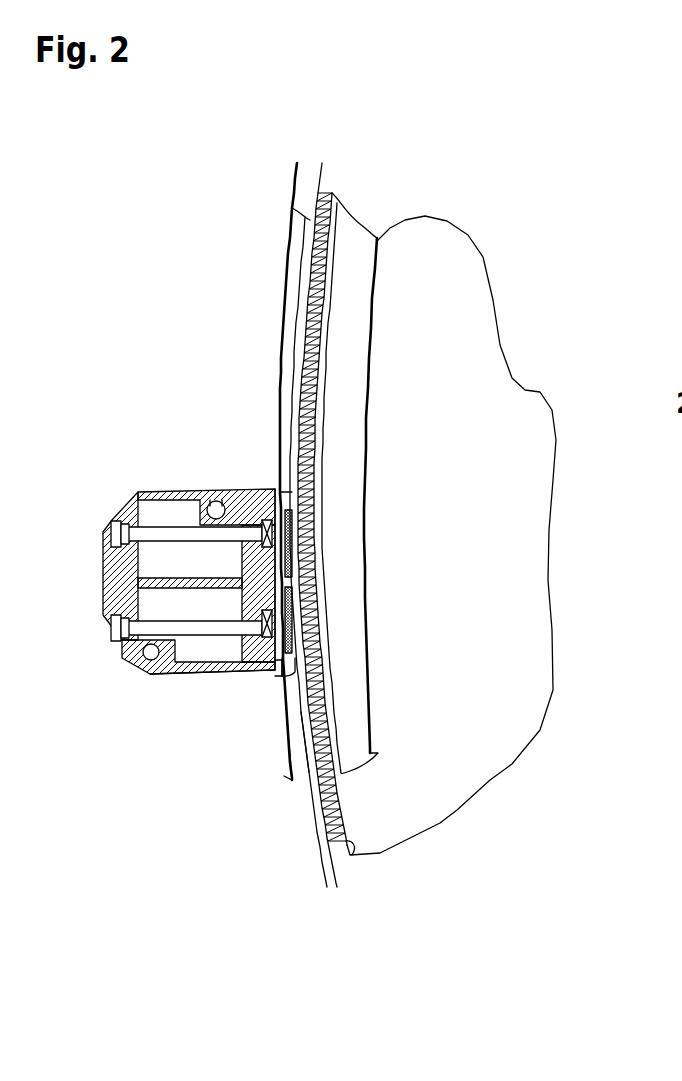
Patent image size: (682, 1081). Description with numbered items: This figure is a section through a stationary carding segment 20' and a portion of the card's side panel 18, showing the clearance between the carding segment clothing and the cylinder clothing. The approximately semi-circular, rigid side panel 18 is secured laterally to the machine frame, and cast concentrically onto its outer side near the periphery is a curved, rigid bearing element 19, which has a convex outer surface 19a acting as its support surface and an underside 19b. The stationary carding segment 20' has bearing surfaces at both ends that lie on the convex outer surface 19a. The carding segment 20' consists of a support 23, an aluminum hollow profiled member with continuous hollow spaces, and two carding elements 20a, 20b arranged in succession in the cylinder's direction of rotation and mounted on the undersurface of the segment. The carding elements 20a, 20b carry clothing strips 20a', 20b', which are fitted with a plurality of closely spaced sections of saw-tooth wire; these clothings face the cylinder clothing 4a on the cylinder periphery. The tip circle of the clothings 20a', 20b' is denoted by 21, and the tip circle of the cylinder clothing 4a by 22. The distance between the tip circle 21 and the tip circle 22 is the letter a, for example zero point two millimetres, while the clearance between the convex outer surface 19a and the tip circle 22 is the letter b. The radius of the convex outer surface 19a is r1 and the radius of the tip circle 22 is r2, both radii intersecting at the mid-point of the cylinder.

The bearing element 19 is at (343, 250).
The convex outer surface 19a is at (284, 236).
The underside 19b is at (378, 240).
The side panel 18 is at (506, 390).
The stationary carding segment 20' is at (186, 546).
The carding element 20a is at (222, 688).
The clothing strip 20a' is at (257, 698).
The carding element 20b is at (260, 516).
The clothing strip 20b' is at (457, 568).
The tip circle of the clothings 21 is at (290, 748).
The tip circle of the cylinder clothing 22 is at (305, 748).
The support 23 is at (163, 675).
The cylinder clothing 4a is at (342, 833).
The distance between the tip circles a is at (367, 875).
The clearance b is at (367, 178).
The radius of the convex outer surface r1 is at (285, 689).
The radius of the tip circle r2 is at (303, 398).